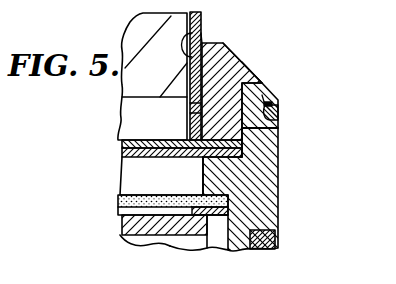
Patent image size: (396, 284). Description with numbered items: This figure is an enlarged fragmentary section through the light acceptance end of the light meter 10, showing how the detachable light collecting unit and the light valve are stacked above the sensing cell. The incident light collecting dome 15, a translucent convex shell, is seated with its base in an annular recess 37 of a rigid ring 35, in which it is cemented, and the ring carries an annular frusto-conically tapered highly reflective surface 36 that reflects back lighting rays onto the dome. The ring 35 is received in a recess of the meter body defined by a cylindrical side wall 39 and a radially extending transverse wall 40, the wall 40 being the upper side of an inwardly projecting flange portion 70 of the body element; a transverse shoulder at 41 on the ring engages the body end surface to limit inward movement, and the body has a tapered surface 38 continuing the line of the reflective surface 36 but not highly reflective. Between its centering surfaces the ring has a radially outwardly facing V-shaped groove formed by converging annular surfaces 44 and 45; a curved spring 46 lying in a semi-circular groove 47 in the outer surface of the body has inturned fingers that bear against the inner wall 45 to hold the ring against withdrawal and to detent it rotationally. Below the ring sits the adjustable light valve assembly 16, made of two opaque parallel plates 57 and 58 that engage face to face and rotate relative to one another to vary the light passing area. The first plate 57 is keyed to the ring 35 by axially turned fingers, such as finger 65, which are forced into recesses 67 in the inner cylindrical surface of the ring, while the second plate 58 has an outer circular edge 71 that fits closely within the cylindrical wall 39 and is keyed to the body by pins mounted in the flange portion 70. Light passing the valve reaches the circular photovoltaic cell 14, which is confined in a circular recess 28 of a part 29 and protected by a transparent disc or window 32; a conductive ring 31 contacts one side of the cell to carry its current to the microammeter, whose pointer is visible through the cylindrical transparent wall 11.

The light meter 10 is at (324, 172).
The cylindrical transparent wall 11 is at (277, 243).
The circular photovoltaic cell 14 is at (124, 227).
The incident light collecting dome 15 is at (203, 15).
The adjustable light valve assembly 16 is at (136, 132).
The circular recess 28 is at (170, 246).
The part 29 is at (147, 246).
The conductive ring 31 is at (228, 212).
The transparent disc or window 32 is at (118, 201).
The rigid ring 35 is at (245, 63).
The reflective surface 36 is at (233, 70).
The annular recess 37 is at (202, 33).
The frusto-conically tapered surface 38 is at (274, 92).
The cylindrical side wall 39 is at (278, 129).
The transverse wall 40 is at (250, 147).
The shoulder 41 is at (258, 80).
The annular surface 44 is at (270, 96).
The annular surface 45 is at (200, 160).
The spring 46 is at (279, 116).
The semi-circular groove 47 is at (279, 106).
The valve plate 57 is at (122, 146).
The valve plate 58 is at (121, 153).
The axially turned finger 65 is at (195, 127).
The recess 67 is at (197, 111).
The flange portion 70 is at (213, 171).
The outer circular edge 71 is at (249, 171).